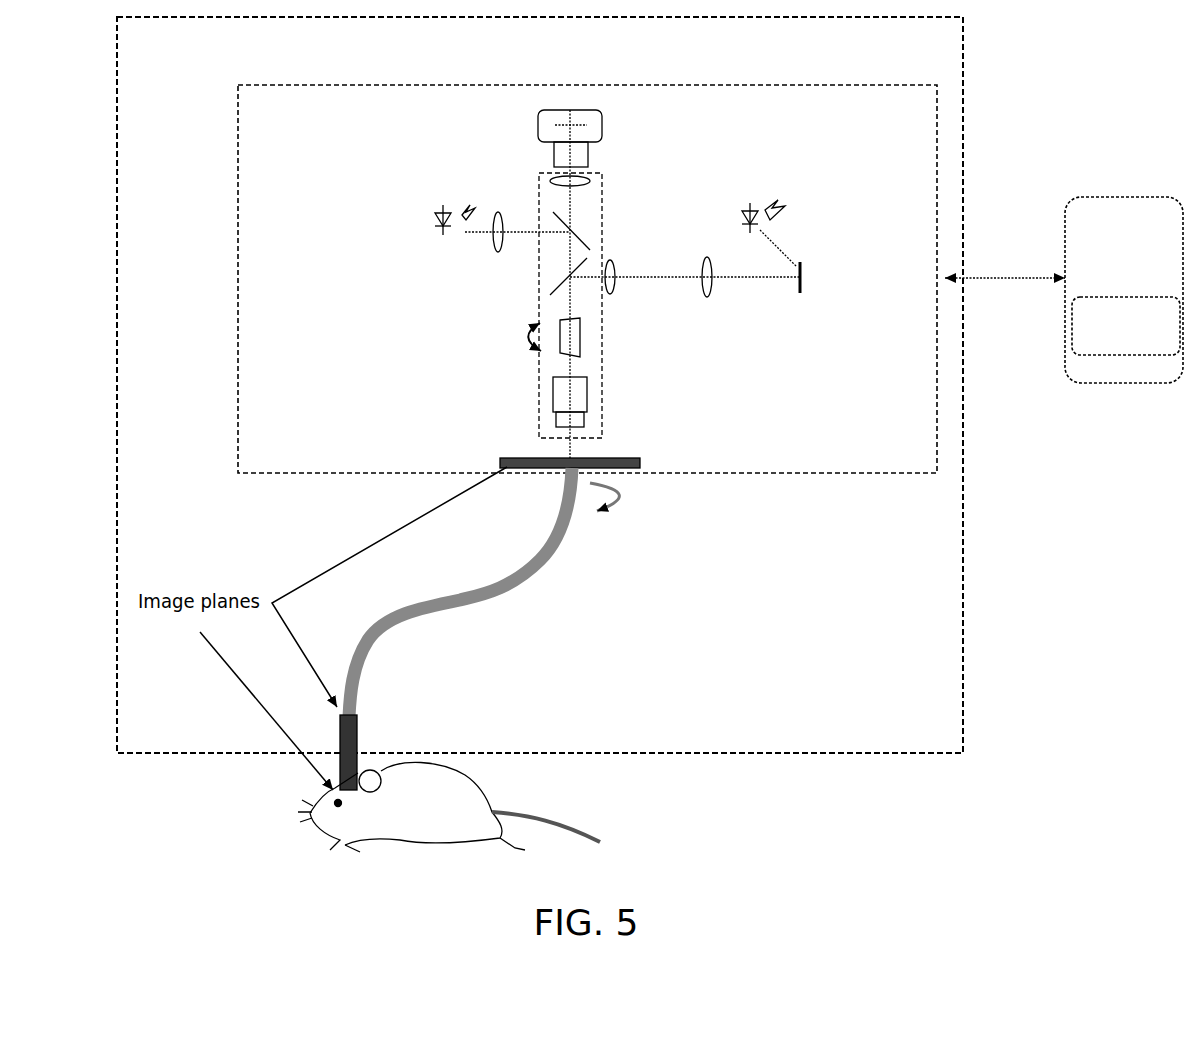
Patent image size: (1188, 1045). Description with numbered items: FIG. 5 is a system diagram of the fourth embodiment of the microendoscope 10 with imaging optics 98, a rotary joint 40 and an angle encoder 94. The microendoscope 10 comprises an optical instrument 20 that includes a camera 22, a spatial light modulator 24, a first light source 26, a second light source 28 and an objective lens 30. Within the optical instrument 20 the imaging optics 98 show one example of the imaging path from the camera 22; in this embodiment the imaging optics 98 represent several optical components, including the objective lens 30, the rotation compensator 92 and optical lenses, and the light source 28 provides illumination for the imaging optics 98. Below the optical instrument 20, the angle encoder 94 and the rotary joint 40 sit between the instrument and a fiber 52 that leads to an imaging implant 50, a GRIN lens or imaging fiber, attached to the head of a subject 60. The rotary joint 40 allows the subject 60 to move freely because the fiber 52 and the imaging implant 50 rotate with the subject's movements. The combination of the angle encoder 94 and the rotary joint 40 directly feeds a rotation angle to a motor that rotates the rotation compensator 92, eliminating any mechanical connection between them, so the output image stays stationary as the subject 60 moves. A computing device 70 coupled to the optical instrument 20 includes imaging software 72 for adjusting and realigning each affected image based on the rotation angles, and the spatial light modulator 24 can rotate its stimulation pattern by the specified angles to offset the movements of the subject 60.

The microendoscope 10 is at (565, 50).
The optical instrument 20 is at (825, 115).
The camera 22 is at (609, 138).
The spatial light modulator 24 is at (699, 305).
The first light source 26 is at (832, 233).
The second light source 28 is at (429, 231).
The objective lens 30 is at (506, 407).
The rotary joint 40 is at (669, 509).
The imaging implant 50 is at (362, 750).
The fiber 52 is at (423, 615).
The subject 60 is at (320, 800).
The computing device 70 is at (1064, 290).
The imaging software 72 is at (1126, 326).
The rotation compensator 92 is at (618, 347).
The angle encoder 94 is at (637, 442).
The imaging optics 98 is at (540, 185).